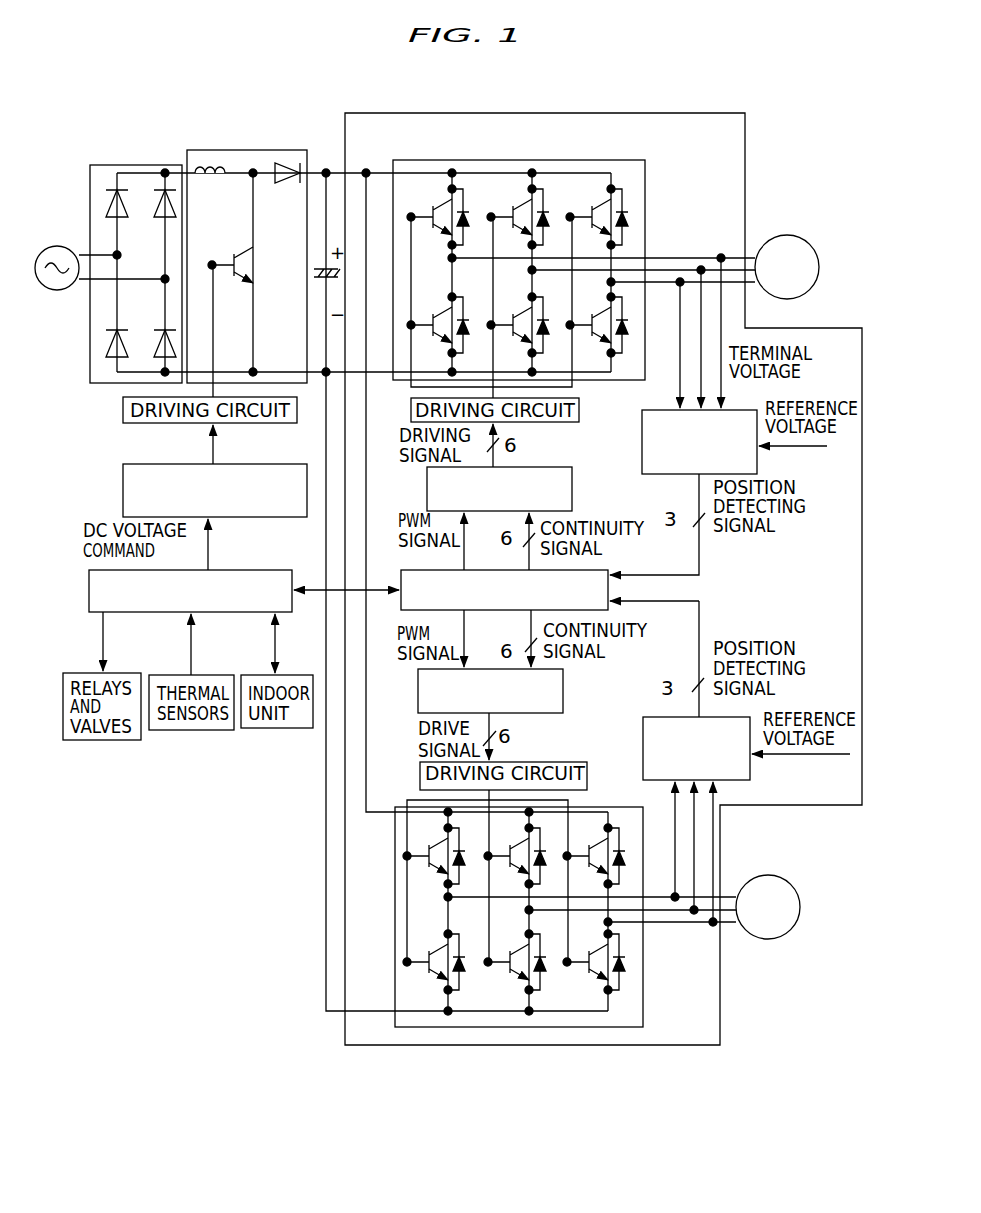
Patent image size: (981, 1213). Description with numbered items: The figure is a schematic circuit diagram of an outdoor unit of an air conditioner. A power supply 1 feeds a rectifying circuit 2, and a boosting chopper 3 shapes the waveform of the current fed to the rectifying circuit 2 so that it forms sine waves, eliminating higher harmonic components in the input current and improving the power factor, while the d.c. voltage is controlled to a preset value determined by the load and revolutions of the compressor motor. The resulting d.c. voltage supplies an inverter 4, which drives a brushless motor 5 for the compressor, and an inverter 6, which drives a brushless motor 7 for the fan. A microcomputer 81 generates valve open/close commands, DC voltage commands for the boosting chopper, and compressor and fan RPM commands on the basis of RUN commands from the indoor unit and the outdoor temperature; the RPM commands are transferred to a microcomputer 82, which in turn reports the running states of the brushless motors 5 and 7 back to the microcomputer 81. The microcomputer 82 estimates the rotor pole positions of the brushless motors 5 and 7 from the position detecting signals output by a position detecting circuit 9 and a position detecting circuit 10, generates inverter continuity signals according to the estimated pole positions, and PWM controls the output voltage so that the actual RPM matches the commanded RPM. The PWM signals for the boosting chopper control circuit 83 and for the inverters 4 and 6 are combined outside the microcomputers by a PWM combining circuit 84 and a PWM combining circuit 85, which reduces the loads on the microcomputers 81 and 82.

The power supply 1 is at (57, 290).
The rectifying circuit 2 is at (90, 175).
The boosting chopper 3 is at (206, 150).
The inverter 4 is at (423, 159).
The brushless motor for compressor 5 is at (808, 290).
The inverter 6 is at (395, 912).
The brushless motor for fan 7 is at (791, 884).
The position detecting circuit 9 is at (642, 442).
The position detecting circuit 10 is at (643, 757).
The microcomputer 81 is at (89, 594).
The microcomputer 82 is at (407, 569).
The boosting chopper control circuit 83 is at (123, 492).
The PWM combining circuit 84 is at (427, 491).
The PWM combining circuit 85 is at (418, 701).